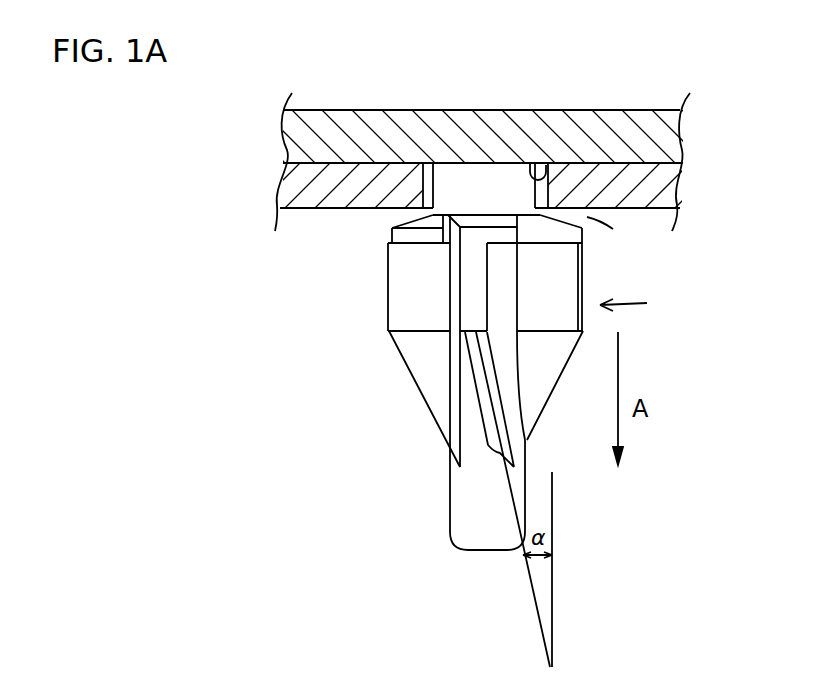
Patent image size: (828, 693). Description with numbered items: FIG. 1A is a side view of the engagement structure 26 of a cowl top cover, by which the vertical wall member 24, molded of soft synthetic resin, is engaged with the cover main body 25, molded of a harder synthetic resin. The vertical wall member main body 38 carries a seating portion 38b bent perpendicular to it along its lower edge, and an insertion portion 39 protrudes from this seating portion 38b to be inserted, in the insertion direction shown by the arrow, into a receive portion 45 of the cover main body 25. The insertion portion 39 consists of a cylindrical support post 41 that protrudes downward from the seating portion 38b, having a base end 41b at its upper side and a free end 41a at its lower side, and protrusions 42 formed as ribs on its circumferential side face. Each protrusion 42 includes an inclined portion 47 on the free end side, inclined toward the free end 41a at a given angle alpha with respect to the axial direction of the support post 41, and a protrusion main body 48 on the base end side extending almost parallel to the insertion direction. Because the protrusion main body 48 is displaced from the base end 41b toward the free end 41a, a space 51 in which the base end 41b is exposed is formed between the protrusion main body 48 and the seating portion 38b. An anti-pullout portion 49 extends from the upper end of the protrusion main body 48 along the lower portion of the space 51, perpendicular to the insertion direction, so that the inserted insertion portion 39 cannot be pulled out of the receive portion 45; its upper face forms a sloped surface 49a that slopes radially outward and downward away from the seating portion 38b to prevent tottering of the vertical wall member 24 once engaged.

The vertical wall member 24 is at (650, 122).
The cover main body 25 is at (656, 200).
The engagement structure 26 is at (641, 304).
The vertical wall member main body 38 is at (327, 108).
The seating portion 38b is at (370, 142).
The insertion portion 39 is at (455, 538).
The support post 41 is at (452, 507).
The free end 41a is at (490, 550).
The base end 41b is at (484, 167).
The protrusion 42 is at (465, 352).
The receive portion 45 is at (527, 163).
The inclined portion 47 is at (478, 408).
The protrusion main body 48 is at (458, 280).
The anti-pullout portion 49 is at (392, 230).
The sloped surface 49a is at (466, 228).
The space 51 is at (612, 241).